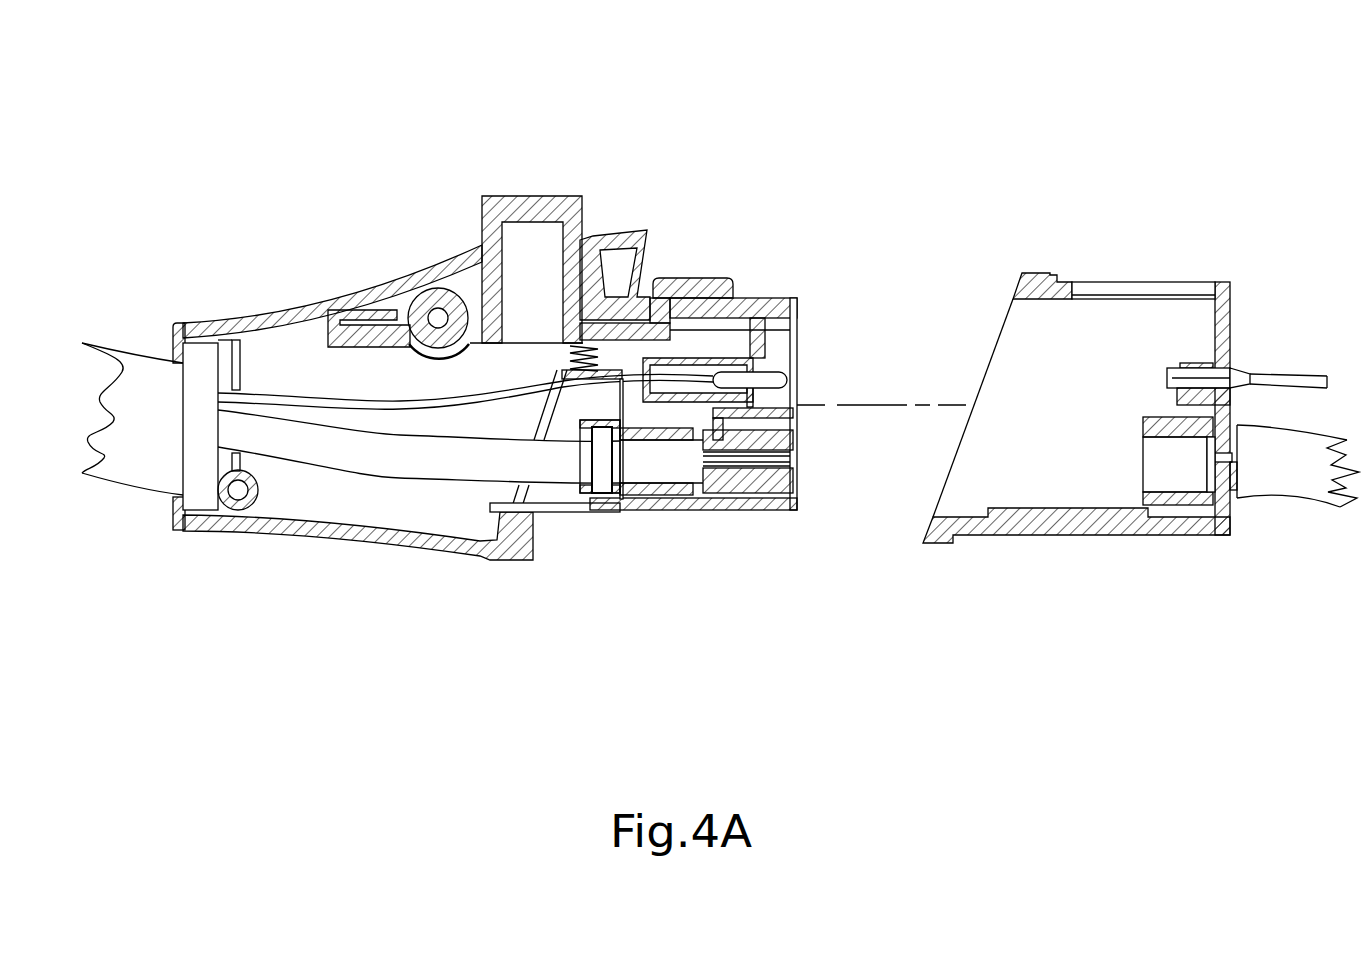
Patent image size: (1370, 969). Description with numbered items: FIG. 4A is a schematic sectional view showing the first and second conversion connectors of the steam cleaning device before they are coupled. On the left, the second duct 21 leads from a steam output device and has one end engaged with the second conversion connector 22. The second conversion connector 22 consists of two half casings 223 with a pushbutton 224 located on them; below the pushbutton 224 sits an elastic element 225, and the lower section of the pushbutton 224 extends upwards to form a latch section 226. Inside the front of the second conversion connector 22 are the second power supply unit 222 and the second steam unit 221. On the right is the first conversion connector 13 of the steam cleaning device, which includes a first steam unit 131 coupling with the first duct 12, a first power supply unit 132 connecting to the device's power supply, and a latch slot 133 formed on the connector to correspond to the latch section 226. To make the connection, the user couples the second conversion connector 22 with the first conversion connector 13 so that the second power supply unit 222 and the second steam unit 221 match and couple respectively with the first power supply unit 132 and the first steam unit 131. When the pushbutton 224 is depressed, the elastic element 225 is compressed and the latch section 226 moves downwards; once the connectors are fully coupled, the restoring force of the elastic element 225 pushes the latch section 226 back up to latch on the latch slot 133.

The first duct 12 is at (1297, 475).
The first conversion connector 13 is at (1050, 537).
The first steam unit 131 is at (1187, 538).
The first power supply unit 132 is at (1230, 347).
The latch slot 133 is at (1108, 290).
The second duct 21 is at (138, 460).
The second conversion connector 22 is at (416, 250).
The second steam unit 221 is at (793, 468).
The second power supply unit 222 is at (793, 368).
The half casings 223 is at (380, 543).
The pushbutton 224 is at (552, 194).
The elastic element 225 is at (583, 512).
The latch section 226 is at (680, 282).